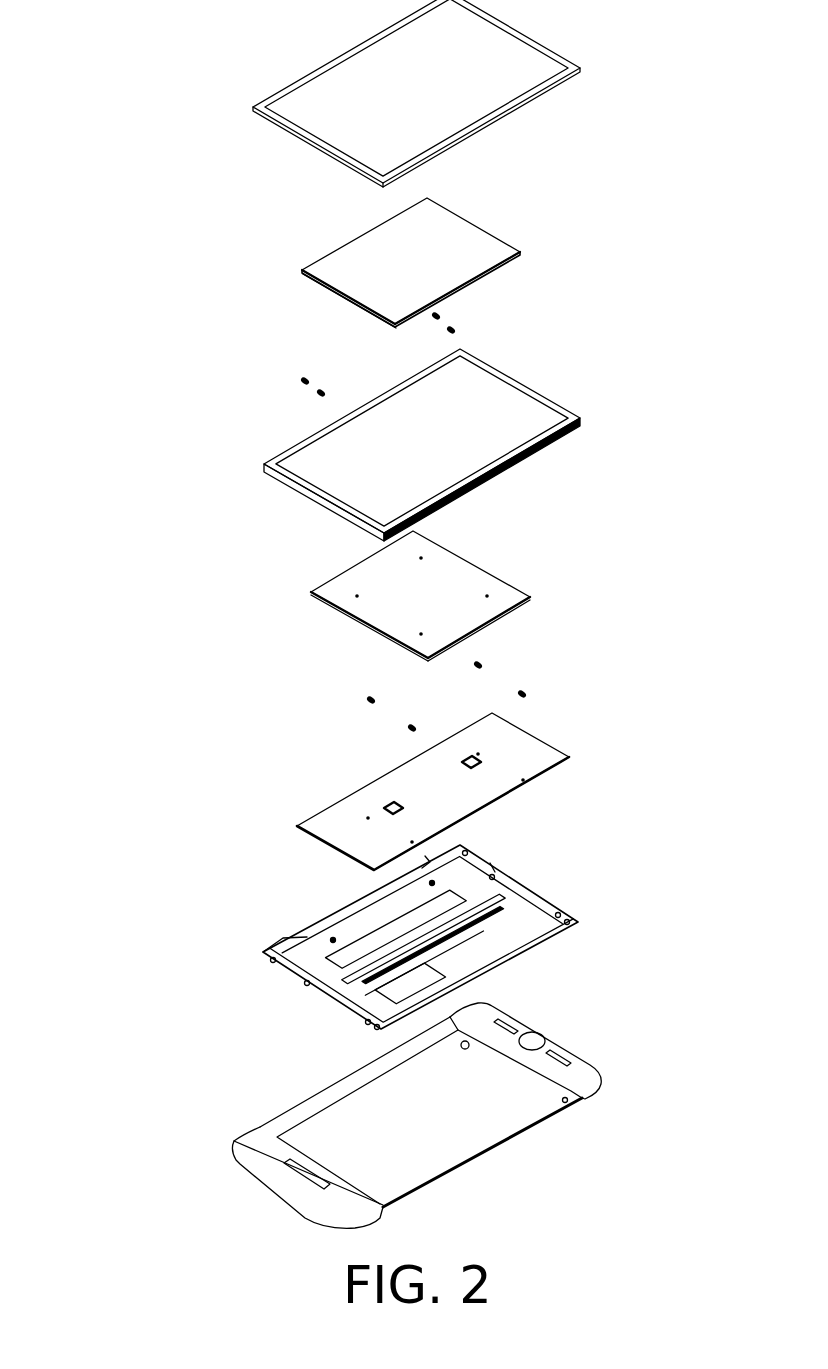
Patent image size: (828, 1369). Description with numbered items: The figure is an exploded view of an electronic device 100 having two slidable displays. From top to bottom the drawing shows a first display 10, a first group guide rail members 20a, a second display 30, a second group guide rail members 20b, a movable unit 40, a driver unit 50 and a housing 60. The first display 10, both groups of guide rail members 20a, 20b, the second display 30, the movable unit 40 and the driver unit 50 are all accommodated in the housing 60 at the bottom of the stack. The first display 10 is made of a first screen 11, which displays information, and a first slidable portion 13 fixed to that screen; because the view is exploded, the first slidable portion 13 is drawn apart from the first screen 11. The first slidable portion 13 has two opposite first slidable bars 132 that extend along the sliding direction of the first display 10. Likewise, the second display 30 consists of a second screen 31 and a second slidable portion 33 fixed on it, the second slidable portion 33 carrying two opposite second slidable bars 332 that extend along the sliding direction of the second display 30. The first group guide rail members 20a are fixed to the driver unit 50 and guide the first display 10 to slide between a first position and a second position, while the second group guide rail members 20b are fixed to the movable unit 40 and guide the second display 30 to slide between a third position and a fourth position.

The electronic device 100 is at (158, 64).
The first display 10 is at (643, 113).
The first screen 11 is at (508, 91).
The first slidable portion 13 is at (487, 246).
The first slidable bar 132 is at (299, 273).
The first group guide rail members 20a is at (305, 380).
The second display 30 is at (650, 445).
The second screen 31 is at (509, 427).
The second slidable portion 33 is at (490, 582).
The second slidable bar 332 is at (311, 593).
The second group guide rail members 20b is at (370, 699).
The movable unit 40 is at (528, 750).
The driver unit 50 is at (533, 898).
The housing 60 is at (582, 1062).